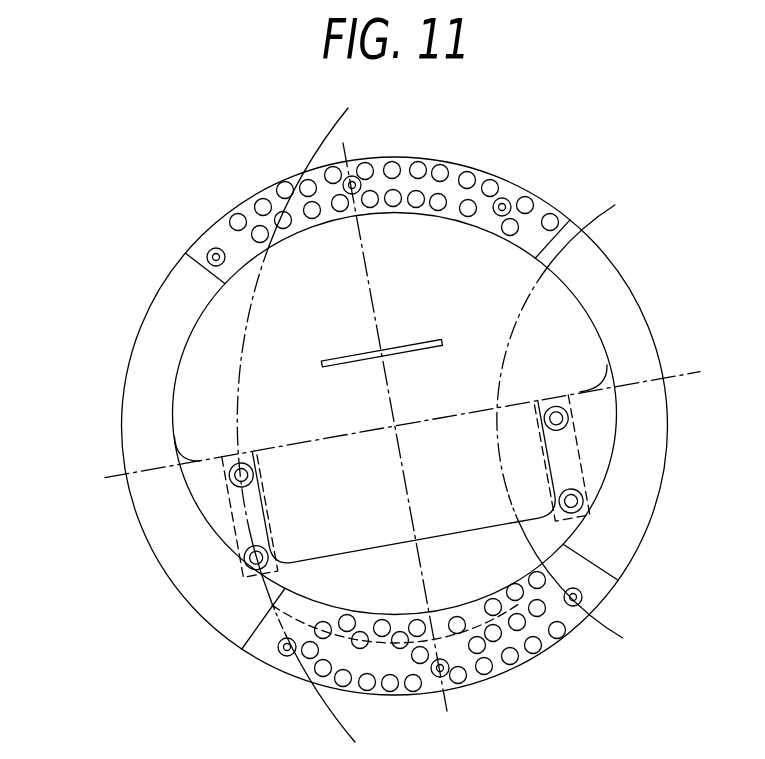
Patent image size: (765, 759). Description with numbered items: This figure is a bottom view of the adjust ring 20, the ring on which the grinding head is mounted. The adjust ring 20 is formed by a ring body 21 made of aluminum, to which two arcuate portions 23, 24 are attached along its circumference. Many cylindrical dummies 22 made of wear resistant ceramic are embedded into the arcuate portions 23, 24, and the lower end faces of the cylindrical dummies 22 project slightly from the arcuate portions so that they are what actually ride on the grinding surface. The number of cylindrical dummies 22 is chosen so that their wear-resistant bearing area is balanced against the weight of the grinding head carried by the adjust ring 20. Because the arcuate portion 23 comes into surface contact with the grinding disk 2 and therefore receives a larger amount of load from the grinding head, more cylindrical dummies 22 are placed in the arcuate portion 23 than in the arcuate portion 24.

The grinding disk 2 is at (328, 118).
The adjust ring 20 is at (124, 388).
The ring body 21 is at (142, 323).
The cylindrical dummies 22 is at (497, 180).
The arcuate portion 23 is at (577, 612).
The arcuate portion 24 is at (532, 200).